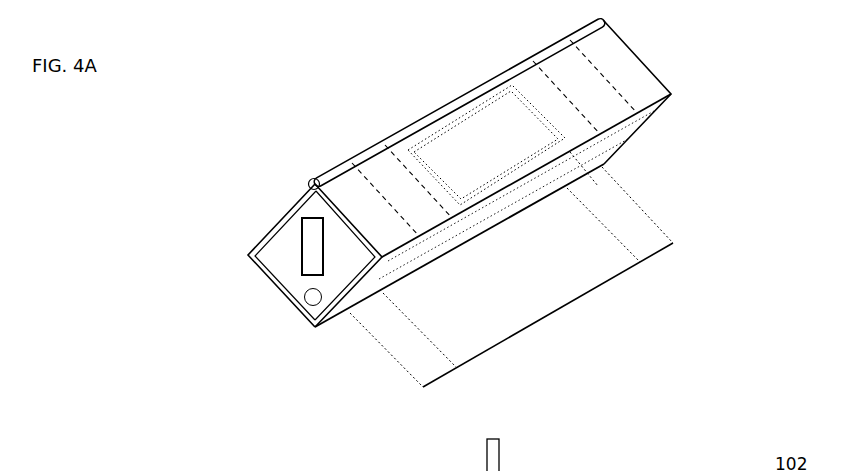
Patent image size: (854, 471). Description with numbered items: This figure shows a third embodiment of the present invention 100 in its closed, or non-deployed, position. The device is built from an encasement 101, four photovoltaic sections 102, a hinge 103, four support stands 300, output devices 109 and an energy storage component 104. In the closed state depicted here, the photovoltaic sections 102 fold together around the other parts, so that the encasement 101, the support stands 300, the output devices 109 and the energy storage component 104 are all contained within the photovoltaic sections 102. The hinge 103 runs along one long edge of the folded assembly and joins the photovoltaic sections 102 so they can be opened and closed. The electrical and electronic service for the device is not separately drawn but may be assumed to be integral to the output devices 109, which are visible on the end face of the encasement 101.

The present invention 100 is at (169, 129).
The encasement 101 is at (314, 323).
The photovoltaic sections 102 is at (260, 240).
The hinge 103 is at (437, 113).
The energy storage component 104 is at (490, 148).
The output devices 109 is at (313, 247).
The support stands 300 is at (558, 313).